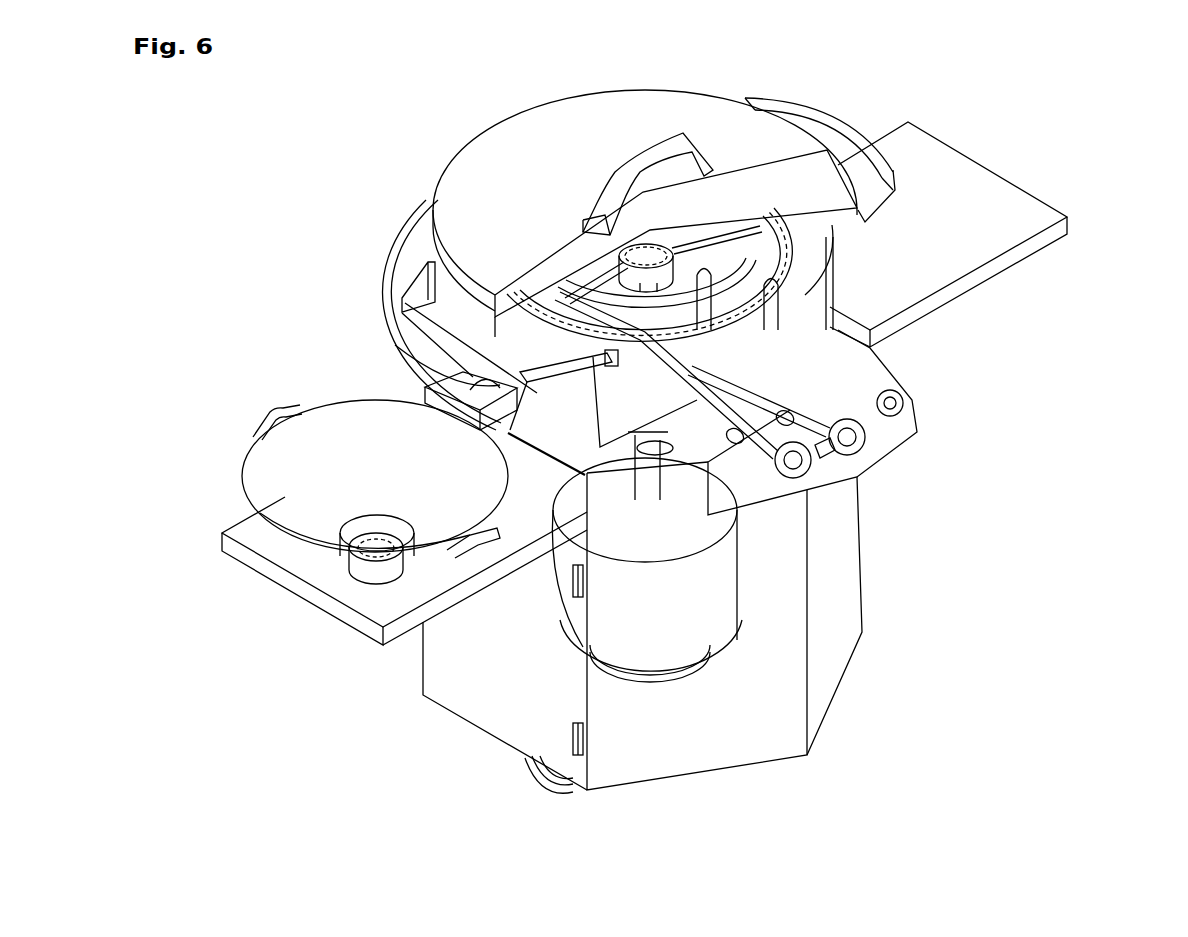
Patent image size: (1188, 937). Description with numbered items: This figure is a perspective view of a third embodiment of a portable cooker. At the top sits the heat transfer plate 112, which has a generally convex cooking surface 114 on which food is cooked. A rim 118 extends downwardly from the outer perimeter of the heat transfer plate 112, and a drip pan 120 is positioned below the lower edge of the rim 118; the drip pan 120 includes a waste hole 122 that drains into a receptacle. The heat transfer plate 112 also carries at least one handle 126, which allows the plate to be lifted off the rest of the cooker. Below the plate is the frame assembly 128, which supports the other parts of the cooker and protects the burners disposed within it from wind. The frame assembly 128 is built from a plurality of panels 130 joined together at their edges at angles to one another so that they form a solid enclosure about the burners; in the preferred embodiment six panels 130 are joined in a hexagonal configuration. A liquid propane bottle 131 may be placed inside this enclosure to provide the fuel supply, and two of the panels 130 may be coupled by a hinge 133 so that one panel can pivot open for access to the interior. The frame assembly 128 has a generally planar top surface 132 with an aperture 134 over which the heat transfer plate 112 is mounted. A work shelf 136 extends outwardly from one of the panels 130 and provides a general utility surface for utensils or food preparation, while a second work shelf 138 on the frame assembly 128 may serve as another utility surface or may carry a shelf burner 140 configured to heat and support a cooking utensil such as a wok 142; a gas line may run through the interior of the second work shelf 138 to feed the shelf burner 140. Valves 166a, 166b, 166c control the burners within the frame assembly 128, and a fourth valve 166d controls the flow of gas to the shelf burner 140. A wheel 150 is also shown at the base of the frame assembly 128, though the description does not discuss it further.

The heat transfer plate 112 is at (487, 118).
The cooking surface 114 is at (796, 200).
The rim 118 is at (453, 300).
The drip pan 120 is at (412, 356).
The waste hole 122 is at (468, 387).
The handle 126 is at (780, 85).
The frame assembly 128 is at (825, 637).
The panels 130 is at (707, 721).
The liquid propane bottle 131 is at (675, 596).
The top surface 132 is at (591, 458).
The hinge 133 is at (570, 580).
The aperture 134 is at (522, 425).
The work shelf 136 is at (985, 192).
The second work shelf 138 is at (397, 628).
The shelf burner 140 is at (362, 578).
The wok 142 is at (280, 492).
The wheel 150 is at (535, 790).
The valve 166a is at (917, 420).
The valve 166b is at (867, 450).
The valve 166c is at (807, 455).
The fourth valve 166d is at (827, 447).